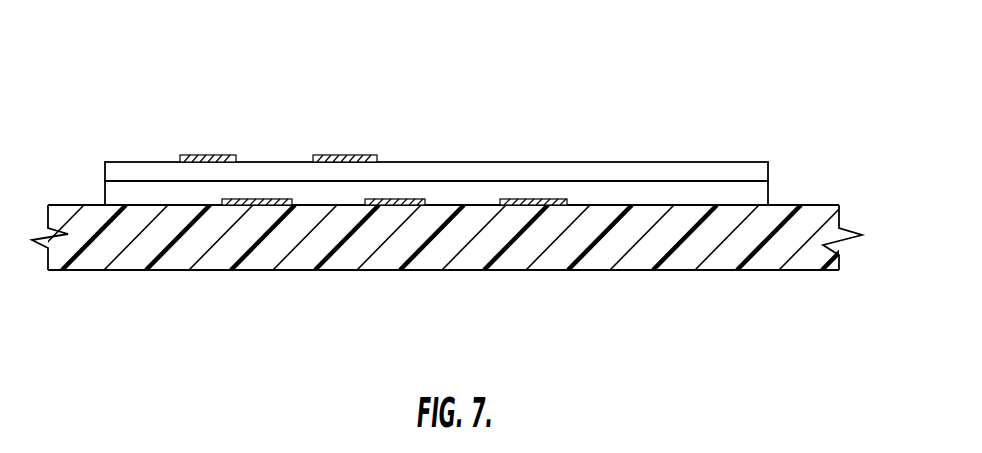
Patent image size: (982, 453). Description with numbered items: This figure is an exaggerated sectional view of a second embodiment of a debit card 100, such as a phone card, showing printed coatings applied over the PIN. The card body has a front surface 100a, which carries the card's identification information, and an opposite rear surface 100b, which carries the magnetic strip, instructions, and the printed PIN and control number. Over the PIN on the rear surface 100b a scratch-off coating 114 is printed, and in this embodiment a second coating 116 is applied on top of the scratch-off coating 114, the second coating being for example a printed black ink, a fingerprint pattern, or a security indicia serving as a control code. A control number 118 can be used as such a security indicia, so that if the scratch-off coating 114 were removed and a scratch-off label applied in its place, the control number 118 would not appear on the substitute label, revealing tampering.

The debit card 100 is at (655, 243).
The front surface 100a is at (772, 271).
The rear surface 100b is at (795, 205).
The scratch-off coating 114 is at (757, 197).
The second coating 116 is at (750, 162).
The control number 118 is at (198, 155).